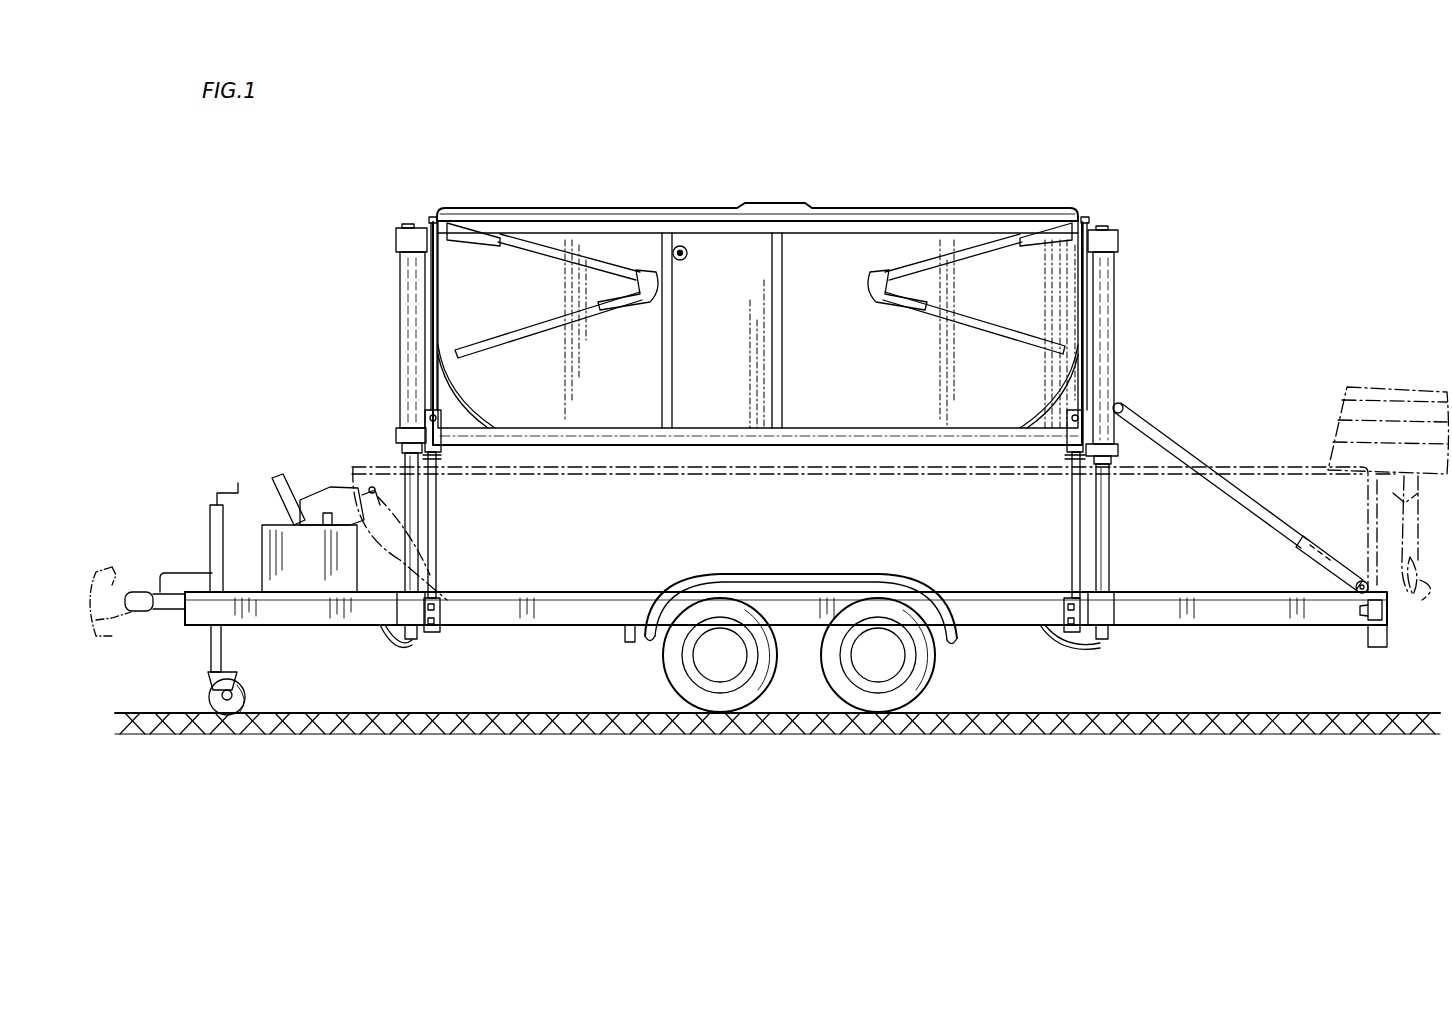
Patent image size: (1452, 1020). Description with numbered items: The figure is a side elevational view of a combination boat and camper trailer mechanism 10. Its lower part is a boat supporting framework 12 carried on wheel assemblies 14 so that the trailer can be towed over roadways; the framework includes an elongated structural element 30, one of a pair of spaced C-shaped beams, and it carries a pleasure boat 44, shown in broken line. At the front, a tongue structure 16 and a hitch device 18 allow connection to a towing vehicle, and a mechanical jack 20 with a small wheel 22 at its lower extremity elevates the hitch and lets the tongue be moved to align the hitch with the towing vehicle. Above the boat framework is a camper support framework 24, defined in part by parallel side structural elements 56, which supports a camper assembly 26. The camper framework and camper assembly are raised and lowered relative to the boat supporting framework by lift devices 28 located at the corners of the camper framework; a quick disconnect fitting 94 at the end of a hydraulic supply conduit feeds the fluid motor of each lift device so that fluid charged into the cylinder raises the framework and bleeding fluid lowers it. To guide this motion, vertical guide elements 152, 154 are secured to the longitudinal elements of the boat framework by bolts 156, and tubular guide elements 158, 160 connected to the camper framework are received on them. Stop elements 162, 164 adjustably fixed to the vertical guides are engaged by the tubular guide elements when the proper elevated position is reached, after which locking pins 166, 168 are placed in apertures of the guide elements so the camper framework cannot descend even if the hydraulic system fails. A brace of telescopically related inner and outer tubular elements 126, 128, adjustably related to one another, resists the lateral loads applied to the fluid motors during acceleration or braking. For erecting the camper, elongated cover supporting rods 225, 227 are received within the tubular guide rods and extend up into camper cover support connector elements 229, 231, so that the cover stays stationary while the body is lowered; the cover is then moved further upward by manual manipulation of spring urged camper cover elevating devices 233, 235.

The combination boat and camper trailer mechanism 10 is at (1136, 253).
The boat supporting framework 12 is at (1188, 640).
The wheel assemblies 14 is at (682, 688).
The tongue structure 16 is at (282, 628).
The hitch device 18 is at (144, 598).
The mechanical jack 20 is at (217, 545).
The small wheel 22 is at (250, 712).
The camper support framework 24 is at (630, 437).
The camper assembly 26 is at (906, 208).
The lift devices 28 is at (400, 366).
The elongated structural element 30 is at (1294, 626).
The pleasure boat 44 is at (1272, 447).
The side structural elements 56 is at (836, 432).
The quick disconnect fitting 94 is at (416, 644).
The inner tubular element 126 is at (1187, 452).
The outer tubular element 128 is at (1303, 556).
The vertical guide element 152 is at (442, 532).
The vertical guide element 154 is at (1078, 532).
The bolts 156 is at (442, 609).
The tubular guide element 158 is at (443, 434).
The tubular guide element 160 is at (1076, 434).
The stop element 162 is at (444, 412).
The stop element 164 is at (1064, 407).
The locking pin 166 is at (442, 460).
The locking pin 168 is at (1070, 460).
The cover supporting rod 225 is at (402, 296).
The cover supporting rod 227 is at (1116, 294).
The camper cover support connector element 229 is at (433, 217).
The camper cover support connector element 231 is at (1088, 217).
The spring urged camper cover elevating device 233 is at (544, 316).
The spring urged camper cover elevating device 235 is at (974, 316).